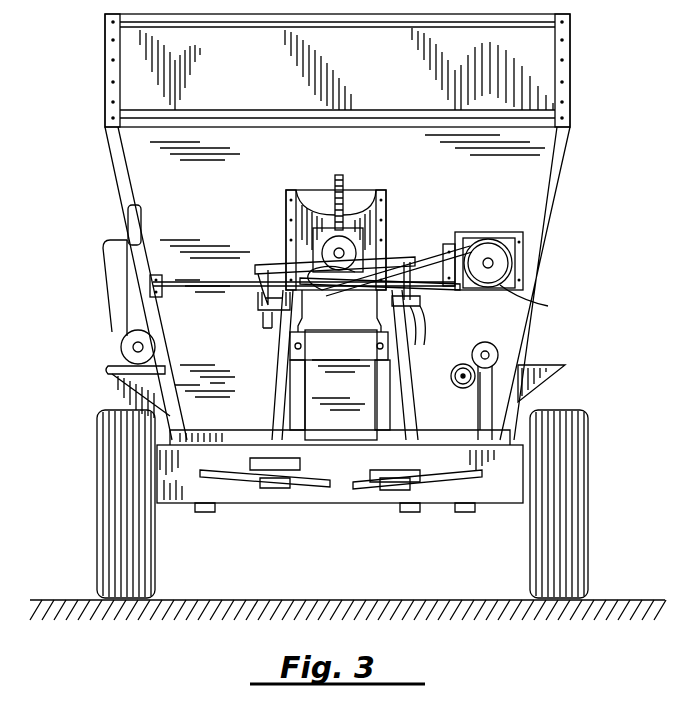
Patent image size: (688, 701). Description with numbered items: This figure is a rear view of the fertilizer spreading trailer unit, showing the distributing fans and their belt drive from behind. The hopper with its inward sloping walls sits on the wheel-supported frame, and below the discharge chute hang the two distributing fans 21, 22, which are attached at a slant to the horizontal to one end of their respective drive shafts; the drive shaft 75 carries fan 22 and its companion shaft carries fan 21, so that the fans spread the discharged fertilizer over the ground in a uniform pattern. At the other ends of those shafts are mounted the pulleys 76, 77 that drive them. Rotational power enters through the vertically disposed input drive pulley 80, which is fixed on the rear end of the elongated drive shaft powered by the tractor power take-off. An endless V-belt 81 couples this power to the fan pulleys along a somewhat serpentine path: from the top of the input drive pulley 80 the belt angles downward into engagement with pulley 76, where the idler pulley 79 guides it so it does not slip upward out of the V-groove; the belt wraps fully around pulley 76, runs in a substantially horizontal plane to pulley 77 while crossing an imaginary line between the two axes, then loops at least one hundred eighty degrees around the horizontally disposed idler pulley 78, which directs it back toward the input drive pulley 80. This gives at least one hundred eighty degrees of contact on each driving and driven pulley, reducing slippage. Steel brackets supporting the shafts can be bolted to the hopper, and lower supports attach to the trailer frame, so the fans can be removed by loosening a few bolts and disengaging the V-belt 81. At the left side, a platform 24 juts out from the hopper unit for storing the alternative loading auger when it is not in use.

The distributing fan 21 is at (292, 486).
The distributing fan 22 is at (385, 488).
The platform 24 is at (125, 372).
The drive shaft 75 is at (410, 300).
The pulley 76 is at (272, 262).
The pulley 77 is at (420, 278).
The horizontally disposed idler pulley 78 is at (317, 292).
The idler pulley 79 is at (348, 240).
The input drive pulley 80 is at (537, 300).
The endless V-belt 81 is at (423, 250).